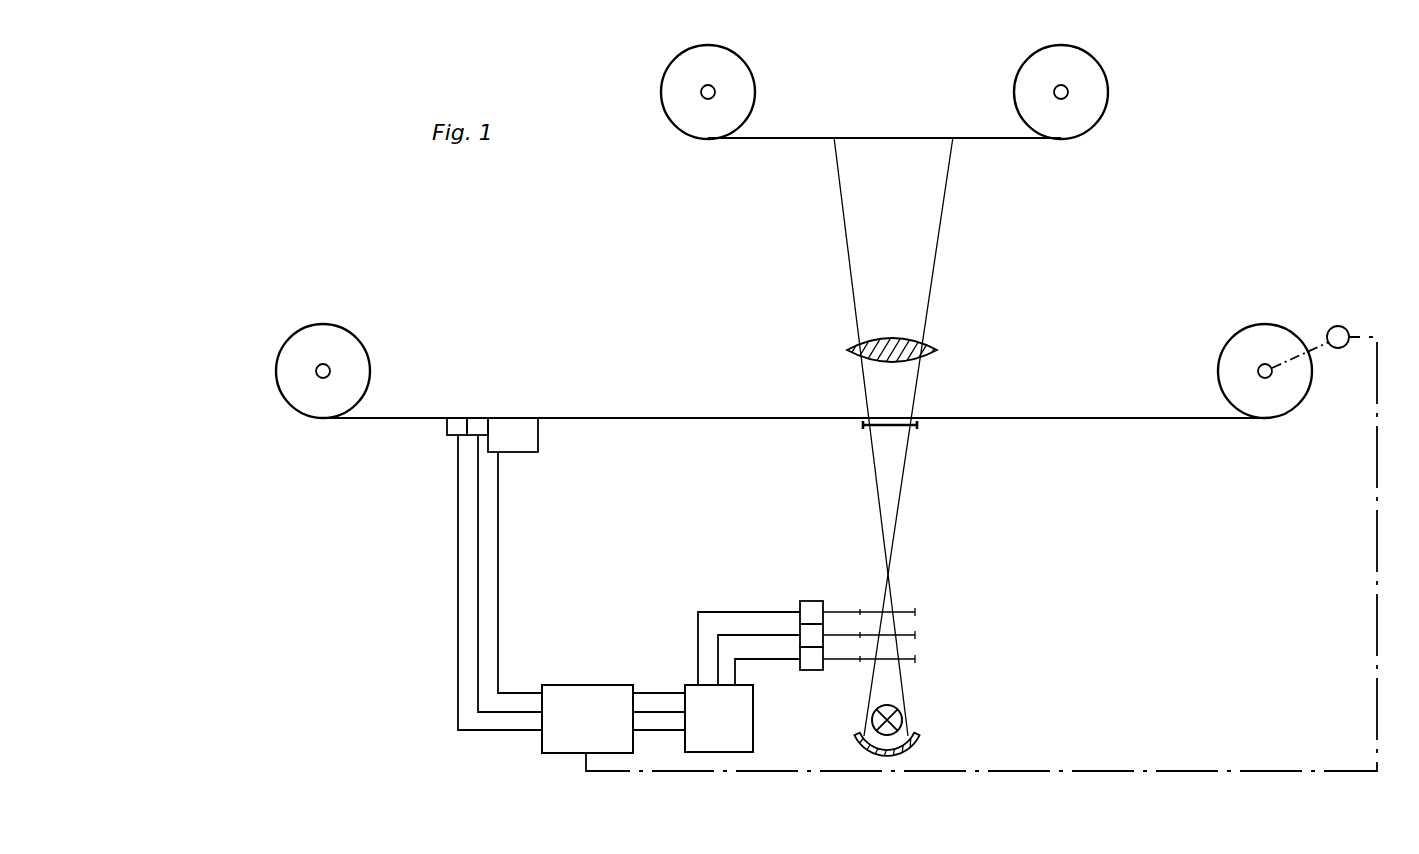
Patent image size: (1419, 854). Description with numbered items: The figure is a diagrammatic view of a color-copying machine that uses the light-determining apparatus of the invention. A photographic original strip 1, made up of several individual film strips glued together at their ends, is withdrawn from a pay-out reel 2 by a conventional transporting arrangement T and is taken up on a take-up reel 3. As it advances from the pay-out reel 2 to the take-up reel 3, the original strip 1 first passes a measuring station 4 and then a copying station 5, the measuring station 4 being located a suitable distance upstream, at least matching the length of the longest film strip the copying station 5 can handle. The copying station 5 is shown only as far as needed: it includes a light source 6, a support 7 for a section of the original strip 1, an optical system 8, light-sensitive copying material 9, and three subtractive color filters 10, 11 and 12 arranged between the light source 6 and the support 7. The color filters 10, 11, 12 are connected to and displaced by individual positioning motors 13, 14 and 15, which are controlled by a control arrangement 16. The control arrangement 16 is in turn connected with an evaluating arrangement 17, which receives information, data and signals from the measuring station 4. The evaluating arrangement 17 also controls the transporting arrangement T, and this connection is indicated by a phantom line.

The photographic original strip 1 is at (1079, 418).
The pay-out reel 2 is at (357, 364).
The take-up reel 3 is at (1238, 362).
The measuring station 4 is at (437, 441).
The copying station 5 is at (922, 405).
The light source 6 is at (904, 720).
The support 7 is at (861, 428).
The optical system 8 is at (848, 349).
The light-sensitive copying material 9 is at (1018, 138).
The subtractive color filter 10 is at (914, 610).
The subtractive color filter 11 is at (914, 636).
The subtractive color filter 12 is at (914, 660).
The positioning motor 13 is at (808, 607).
The positioning motor 14 is at (816, 636).
The positioning motor 15 is at (812, 668).
The control arrangement 16 is at (742, 742).
The evaluating arrangement 17 is at (548, 744).
The transporting arrangement T is at (1343, 330).